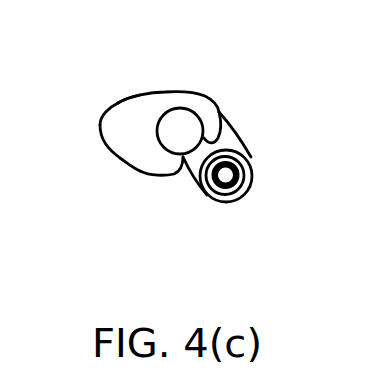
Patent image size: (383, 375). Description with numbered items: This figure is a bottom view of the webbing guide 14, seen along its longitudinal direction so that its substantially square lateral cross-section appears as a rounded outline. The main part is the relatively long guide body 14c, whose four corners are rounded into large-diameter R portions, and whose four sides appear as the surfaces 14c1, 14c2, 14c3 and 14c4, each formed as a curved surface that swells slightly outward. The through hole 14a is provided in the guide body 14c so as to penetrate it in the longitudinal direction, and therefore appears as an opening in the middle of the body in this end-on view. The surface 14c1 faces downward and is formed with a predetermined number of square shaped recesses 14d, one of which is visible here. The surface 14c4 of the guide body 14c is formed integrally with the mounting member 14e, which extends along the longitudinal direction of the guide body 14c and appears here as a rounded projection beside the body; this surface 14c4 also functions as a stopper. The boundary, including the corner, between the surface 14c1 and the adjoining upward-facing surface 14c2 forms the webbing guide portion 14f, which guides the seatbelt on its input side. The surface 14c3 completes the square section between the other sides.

The webbing guide 14 is at (169, 148).
The through hole 14a is at (178, 123).
The guide body 14c is at (107, 110).
The surface 14c1 is at (121, 161).
The surface 14c2 is at (133, 99).
The surface 14c3 is at (219, 108).
The surface 14c4 is at (190, 180).
The square shaped recess 14d is at (227, 175).
The mounting member 14e is at (239, 196).
The webbing guide portion 14f is at (100, 138).